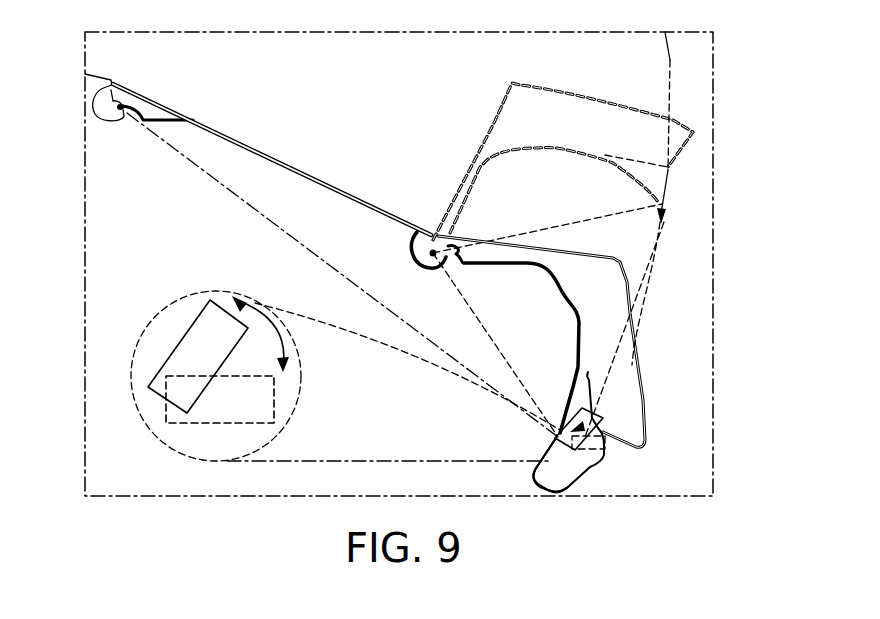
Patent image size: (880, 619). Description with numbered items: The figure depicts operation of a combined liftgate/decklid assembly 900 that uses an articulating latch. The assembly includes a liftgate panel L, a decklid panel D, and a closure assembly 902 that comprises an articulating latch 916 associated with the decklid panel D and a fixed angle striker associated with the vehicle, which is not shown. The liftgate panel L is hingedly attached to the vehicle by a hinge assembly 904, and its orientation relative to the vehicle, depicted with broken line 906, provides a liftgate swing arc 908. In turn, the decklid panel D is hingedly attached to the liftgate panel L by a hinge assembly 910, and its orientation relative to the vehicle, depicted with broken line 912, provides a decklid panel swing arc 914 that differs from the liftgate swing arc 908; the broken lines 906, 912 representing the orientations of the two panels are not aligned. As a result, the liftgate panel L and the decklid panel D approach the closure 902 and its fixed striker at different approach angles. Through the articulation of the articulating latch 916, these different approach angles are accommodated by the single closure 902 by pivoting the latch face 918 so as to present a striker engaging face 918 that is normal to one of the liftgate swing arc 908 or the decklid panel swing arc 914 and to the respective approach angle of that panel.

The liftgate/decklid assembly 900 is at (597, 95).
The closure assembly 902 is at (580, 481).
The hinge assembly 904 is at (123, 98).
The broken line 906 is at (268, 222).
The liftgate swing arc 908 is at (672, 73).
The hinge assembly 910 is at (417, 257).
The broken line 912 is at (560, 223).
The decklid panel swing arc 914 is at (662, 268).
The articulating latch 916 is at (187, 330).
The latch face 918 is at (148, 388).
The liftgate panel L is at (262, 142).
The decklid panel D is at (493, 123).